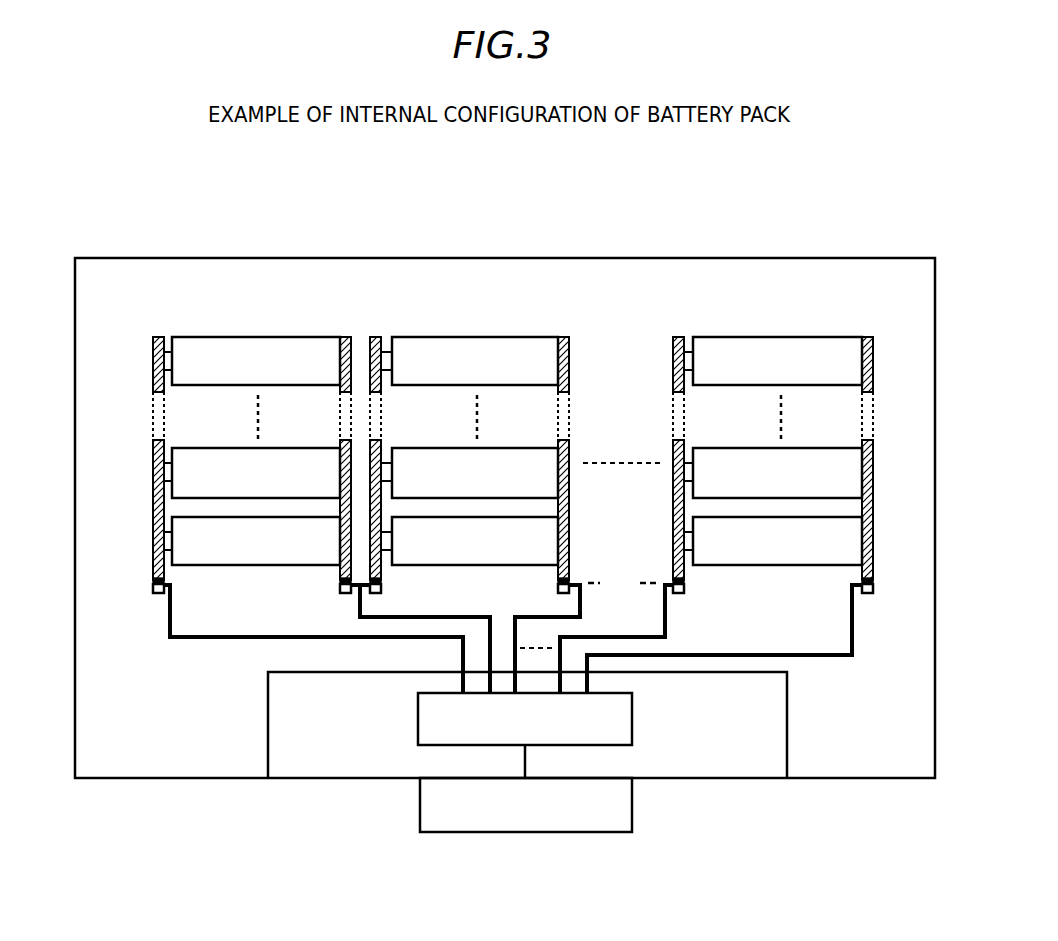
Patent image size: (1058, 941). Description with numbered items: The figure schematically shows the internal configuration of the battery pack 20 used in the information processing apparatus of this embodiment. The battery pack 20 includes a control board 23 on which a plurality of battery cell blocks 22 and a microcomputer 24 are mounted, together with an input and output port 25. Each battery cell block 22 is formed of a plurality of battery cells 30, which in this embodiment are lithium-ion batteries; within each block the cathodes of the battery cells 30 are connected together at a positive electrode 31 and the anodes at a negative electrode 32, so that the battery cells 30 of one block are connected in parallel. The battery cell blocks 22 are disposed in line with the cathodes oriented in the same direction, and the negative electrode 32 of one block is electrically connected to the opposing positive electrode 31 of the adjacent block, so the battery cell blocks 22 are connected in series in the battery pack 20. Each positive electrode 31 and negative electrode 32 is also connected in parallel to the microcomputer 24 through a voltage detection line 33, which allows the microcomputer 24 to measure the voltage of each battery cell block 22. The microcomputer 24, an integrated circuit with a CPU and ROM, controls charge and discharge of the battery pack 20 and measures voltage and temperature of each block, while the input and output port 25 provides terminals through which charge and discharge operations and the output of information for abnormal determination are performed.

The battery pack 20 is at (518, 257).
The battery cell block 22 is at (250, 398).
The control board 23 is at (738, 746).
The microcomputer 24 is at (632, 727).
The input and output port 25 is at (522, 834).
The battery cell 30 is at (278, 349).
The positive electrode 31 is at (158, 337).
The negative electrode 32 is at (345, 337).
The voltage detection line 33 is at (206, 639).